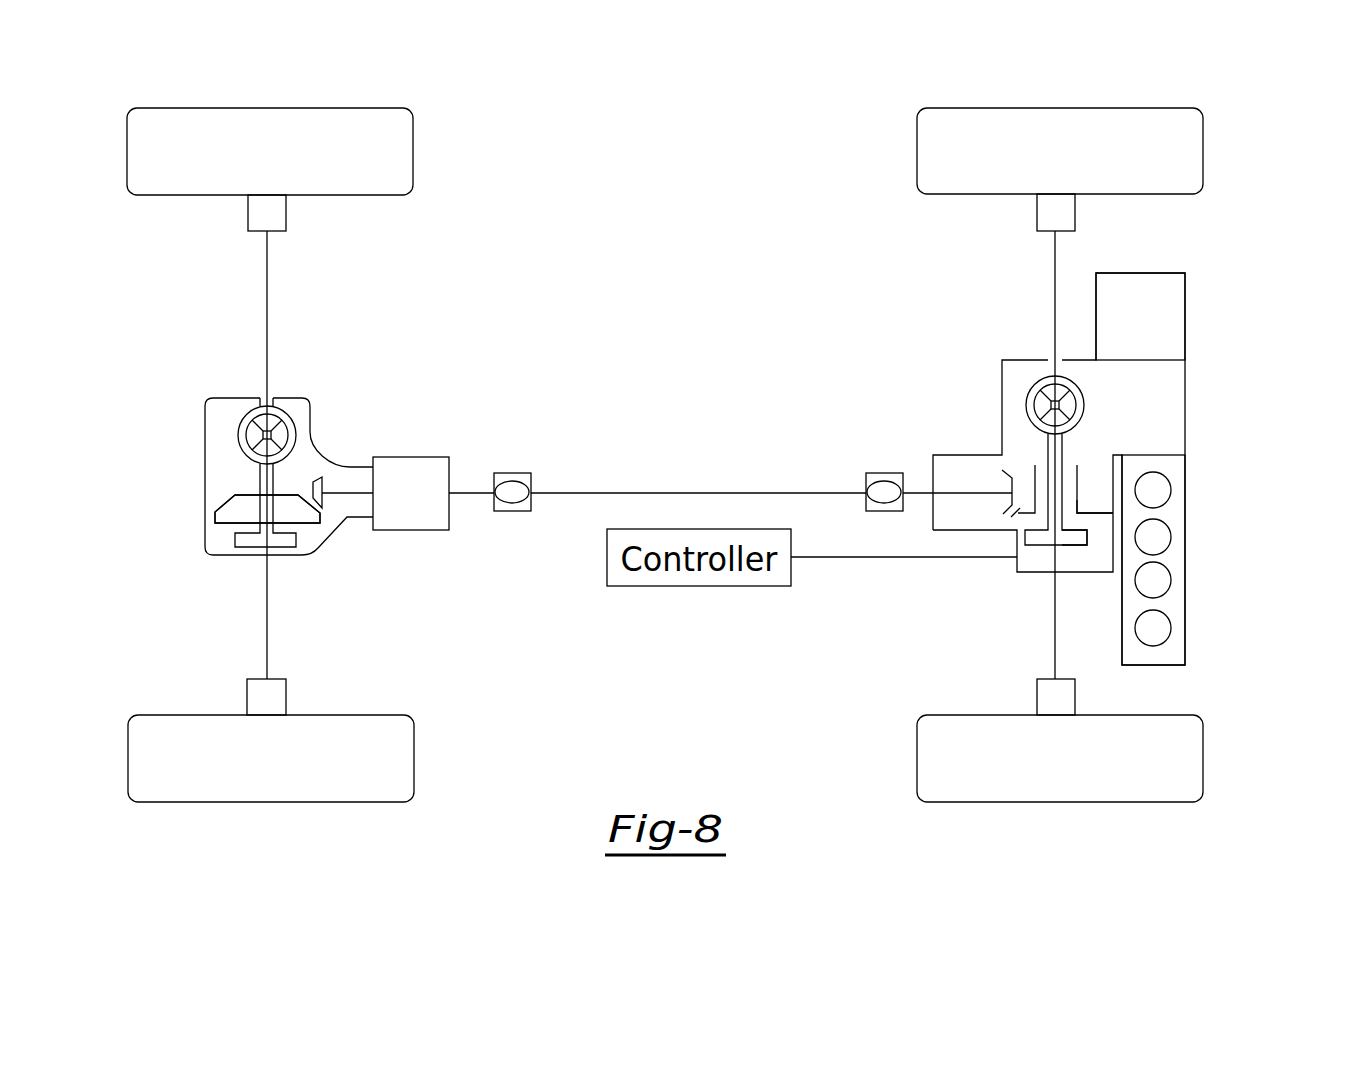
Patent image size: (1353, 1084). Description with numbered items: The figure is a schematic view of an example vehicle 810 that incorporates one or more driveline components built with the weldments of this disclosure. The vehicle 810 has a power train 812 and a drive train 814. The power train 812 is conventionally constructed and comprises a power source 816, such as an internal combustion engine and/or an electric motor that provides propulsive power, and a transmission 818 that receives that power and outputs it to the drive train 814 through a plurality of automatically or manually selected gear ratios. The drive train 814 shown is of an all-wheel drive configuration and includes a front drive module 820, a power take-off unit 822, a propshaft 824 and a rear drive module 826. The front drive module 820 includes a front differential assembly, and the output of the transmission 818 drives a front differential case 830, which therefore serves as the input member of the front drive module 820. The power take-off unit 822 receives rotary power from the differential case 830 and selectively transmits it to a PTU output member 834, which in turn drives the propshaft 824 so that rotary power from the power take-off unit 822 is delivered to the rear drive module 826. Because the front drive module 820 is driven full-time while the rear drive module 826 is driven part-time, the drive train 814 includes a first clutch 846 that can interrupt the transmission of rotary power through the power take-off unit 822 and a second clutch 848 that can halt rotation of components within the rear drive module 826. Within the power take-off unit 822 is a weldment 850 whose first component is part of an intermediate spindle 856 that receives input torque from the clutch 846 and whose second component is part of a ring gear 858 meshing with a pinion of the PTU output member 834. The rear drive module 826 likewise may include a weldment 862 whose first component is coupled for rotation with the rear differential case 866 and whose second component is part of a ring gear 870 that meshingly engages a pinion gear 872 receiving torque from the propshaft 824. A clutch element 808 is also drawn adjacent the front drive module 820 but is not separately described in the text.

The disconnect clutch 808 is at (1007, 473).
The vehicle 810 is at (184, 826).
The power train 812 is at (1207, 469).
The drive train 814 is at (676, 426).
The power source 816 is at (1172, 660).
The transmission 818 is at (1172, 300).
The front drive module 820 is at (967, 393).
The power take-off unit 822 is at (1027, 467).
The propshaft 824 is at (615, 493).
The rear drive module 826 is at (271, 487).
The front differential case 830 is at (1076, 388).
The PTU output member 834 is at (918, 492).
The clutch 846 is at (1043, 545).
The second clutch 848 is at (247, 545).
The weldment 850 is at (1092, 528).
The intermediate spindle 856 is at (1115, 460).
The ring gear 858 is at (1093, 510).
The weldment 862 is at (224, 531).
The rear differential case 866 is at (280, 420).
The ring gear 870 is at (233, 508).
The pinion gear 872 is at (316, 477).